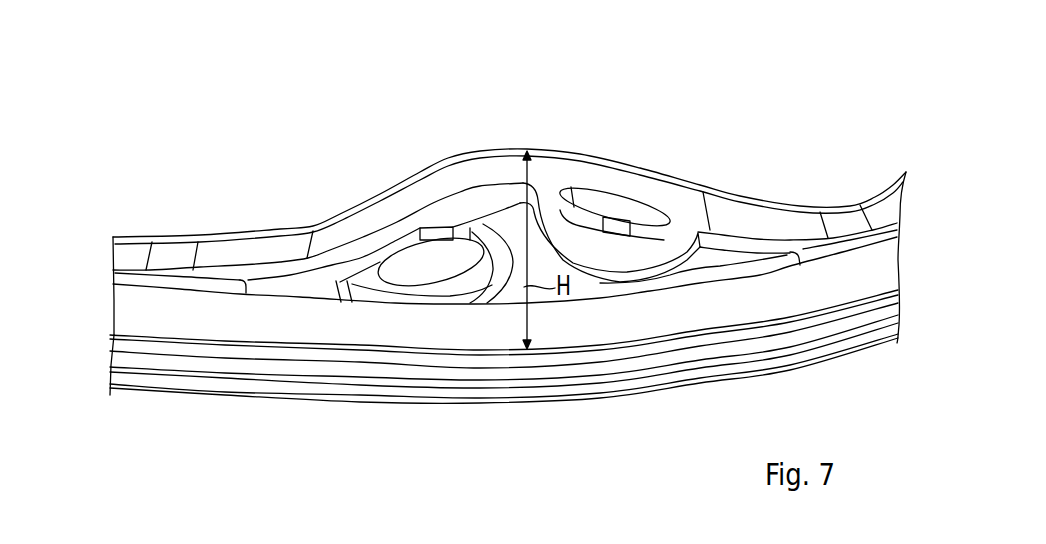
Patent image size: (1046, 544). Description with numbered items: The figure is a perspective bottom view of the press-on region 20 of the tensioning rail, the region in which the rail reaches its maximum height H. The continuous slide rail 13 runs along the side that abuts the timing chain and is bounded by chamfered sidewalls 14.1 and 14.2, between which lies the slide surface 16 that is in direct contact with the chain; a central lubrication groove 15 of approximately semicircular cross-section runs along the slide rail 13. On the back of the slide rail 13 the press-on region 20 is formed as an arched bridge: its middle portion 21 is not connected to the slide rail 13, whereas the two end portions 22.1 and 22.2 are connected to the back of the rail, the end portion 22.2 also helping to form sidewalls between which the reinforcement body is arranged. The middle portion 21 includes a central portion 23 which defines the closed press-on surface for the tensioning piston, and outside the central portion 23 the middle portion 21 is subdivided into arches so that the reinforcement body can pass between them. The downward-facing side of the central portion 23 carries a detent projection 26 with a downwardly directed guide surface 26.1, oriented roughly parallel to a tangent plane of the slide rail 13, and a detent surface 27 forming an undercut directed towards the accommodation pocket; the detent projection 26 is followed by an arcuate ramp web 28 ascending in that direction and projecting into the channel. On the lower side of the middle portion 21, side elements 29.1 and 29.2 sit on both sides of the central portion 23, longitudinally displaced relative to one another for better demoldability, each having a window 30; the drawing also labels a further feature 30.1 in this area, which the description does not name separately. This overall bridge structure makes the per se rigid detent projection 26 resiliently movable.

The slide rail 13 is at (668, 325).
The chamfered sidewall 14.1 is at (120, 392).
The chamfered sidewall 14.2 is at (123, 332).
The central lubrication groove 15 is at (232, 368).
The slide surface 16 is at (298, 380).
The press-on region 20 is at (548, 140).
The middle portion 21 is at (446, 150).
The end portion 22.1 is at (180, 253).
The end portion 22.2 is at (840, 218).
The central portion 23 is at (599, 146).
The detent projection 26 is at (447, 220).
The guide surface 26.1 is at (410, 262).
The detent surface 27 is at (447, 220).
The arcuate ramp web 28 is at (641, 186).
The side element 29.1 is at (571, 385).
The side element 29.2 is at (662, 242).
The window 30 is at (645, 217).
The upper groove edge 30.1 is at (503, 387).